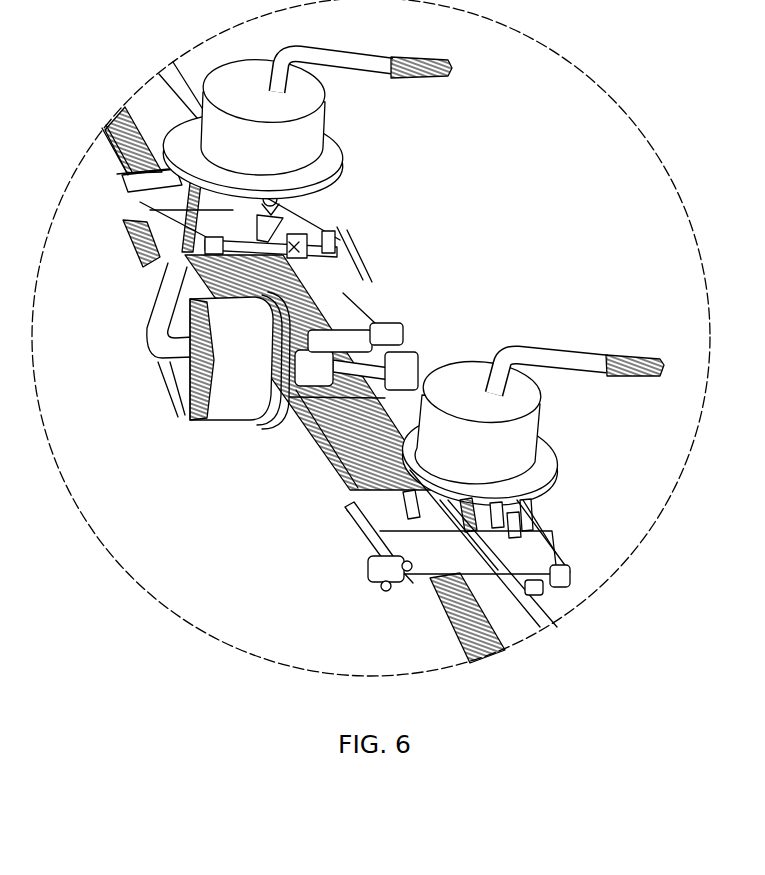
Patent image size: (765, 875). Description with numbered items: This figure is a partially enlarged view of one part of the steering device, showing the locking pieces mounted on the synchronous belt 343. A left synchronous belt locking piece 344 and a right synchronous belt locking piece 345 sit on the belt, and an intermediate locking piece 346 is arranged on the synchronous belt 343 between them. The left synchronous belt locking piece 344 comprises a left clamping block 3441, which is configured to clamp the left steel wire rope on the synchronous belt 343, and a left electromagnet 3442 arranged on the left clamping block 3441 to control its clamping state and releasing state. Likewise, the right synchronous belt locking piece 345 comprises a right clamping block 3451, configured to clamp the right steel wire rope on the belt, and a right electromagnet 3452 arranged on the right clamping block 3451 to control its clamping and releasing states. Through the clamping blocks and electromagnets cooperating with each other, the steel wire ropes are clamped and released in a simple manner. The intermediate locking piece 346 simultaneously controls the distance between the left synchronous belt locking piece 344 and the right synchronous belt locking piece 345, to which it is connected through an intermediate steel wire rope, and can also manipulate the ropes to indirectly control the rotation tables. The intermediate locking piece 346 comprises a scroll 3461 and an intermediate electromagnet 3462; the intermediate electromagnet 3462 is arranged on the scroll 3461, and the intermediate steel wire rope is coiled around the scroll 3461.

The synchronous belt 343 is at (303, 362).
The left synchronous belt locking piece 344 is at (371, 560).
The left clamping block 3441 is at (335, 603).
The left electromagnet 3442 is at (325, 534).
The right synchronous belt locking piece 345 is at (351, 156).
The right clamping block 3451 is at (331, 215).
The right electromagnet 3452 is at (463, 200).
The intermediate locking piece 346 is at (398, 323).
The scroll 3461 is at (408, 340).
The intermediate electromagnet 3462 is at (356, 323).